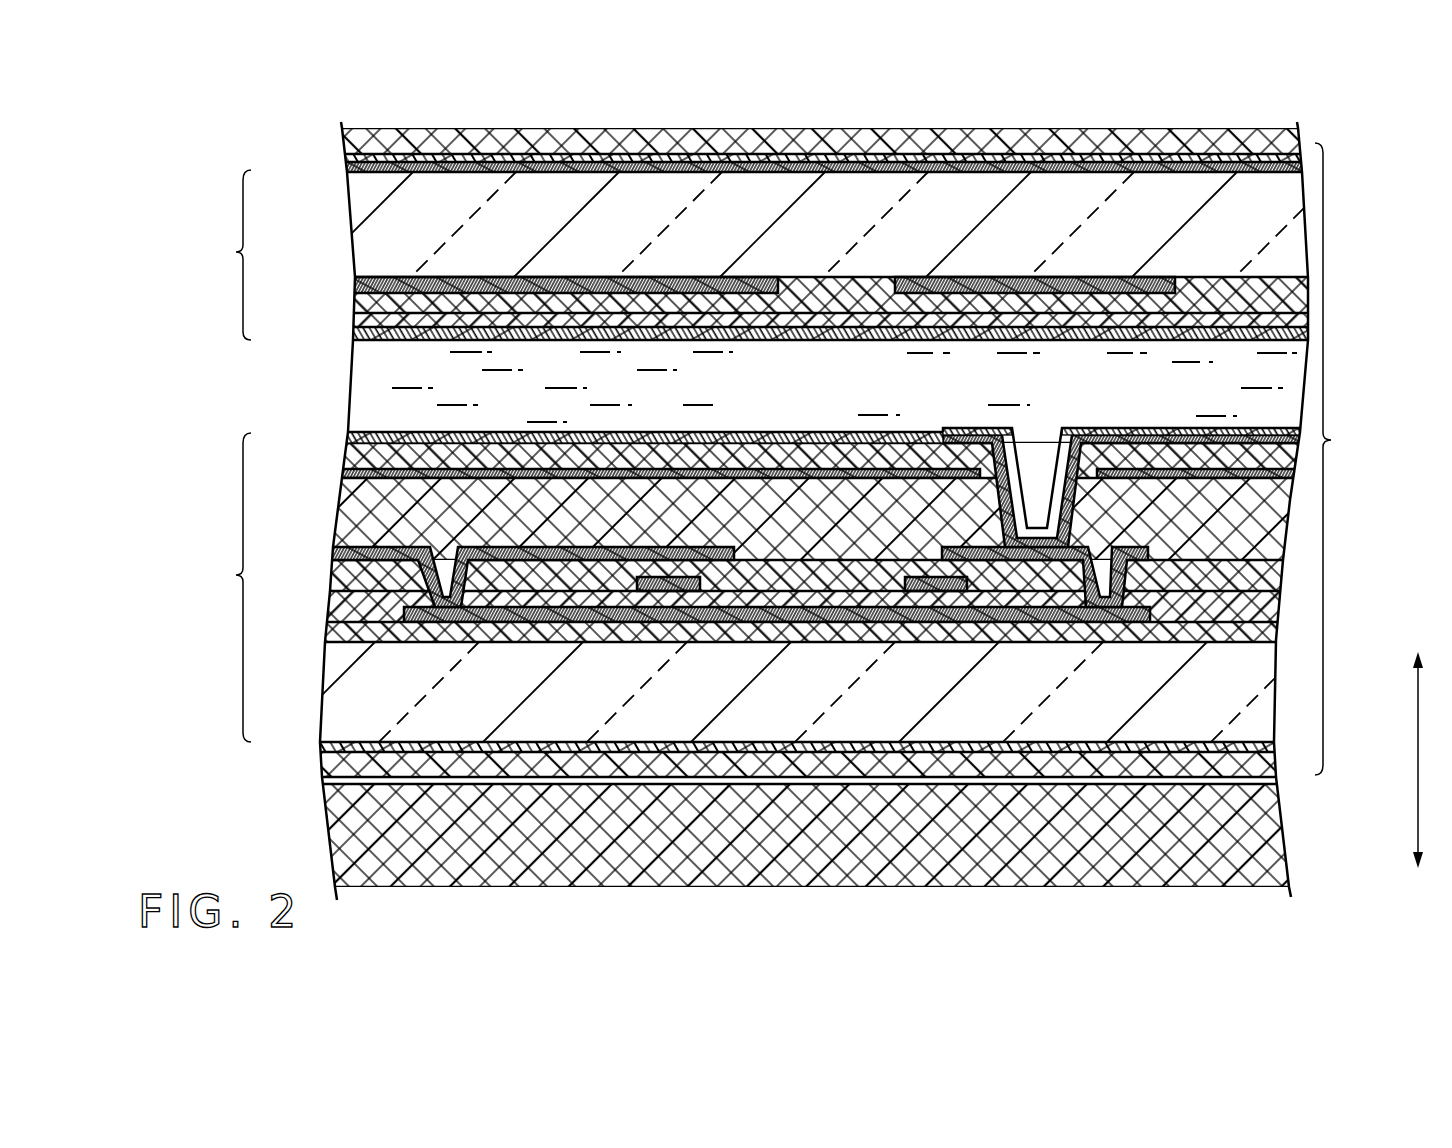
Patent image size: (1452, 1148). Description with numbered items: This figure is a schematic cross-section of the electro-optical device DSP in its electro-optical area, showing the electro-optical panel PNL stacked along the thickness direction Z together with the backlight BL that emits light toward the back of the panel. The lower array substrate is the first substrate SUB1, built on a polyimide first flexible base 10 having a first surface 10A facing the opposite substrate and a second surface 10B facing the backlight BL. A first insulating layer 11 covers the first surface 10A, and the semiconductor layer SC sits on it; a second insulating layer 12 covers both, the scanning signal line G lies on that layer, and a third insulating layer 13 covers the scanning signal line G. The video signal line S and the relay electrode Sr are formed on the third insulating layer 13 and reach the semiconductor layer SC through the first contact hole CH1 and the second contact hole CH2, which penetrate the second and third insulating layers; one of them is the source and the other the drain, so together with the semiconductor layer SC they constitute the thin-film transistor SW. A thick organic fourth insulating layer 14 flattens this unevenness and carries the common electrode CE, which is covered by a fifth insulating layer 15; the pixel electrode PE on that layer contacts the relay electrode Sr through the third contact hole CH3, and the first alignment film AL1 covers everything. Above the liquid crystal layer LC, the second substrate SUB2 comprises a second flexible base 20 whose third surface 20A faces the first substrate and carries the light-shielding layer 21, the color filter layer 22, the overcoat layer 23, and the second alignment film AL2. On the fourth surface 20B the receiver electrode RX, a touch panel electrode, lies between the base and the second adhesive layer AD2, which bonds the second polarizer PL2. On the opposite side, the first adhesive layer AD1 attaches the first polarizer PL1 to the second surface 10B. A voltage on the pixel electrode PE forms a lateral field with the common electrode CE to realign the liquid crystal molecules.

The second polarizer PL2 is at (342, 136).
The second adhesive layer AD2 is at (345, 158).
The receiver electrode RX is at (350, 168).
The second flexible base 20 is at (372, 246).
The light-shielding layer 21 is at (483, 278).
The color filter layer 22 is at (370, 302).
The overcoat layer 23 is at (368, 322).
The second alignment film AL2 is at (363, 335).
The second substrate SUB2 is at (214, 255).
The liquid crystal layer LC is at (360, 390).
The third surface 20A is at (840, 280).
The fourth surface 20B is at (846, 172).
The electro-optical device DSP is at (1266, 130).
The electro-optical panel PNL is at (1349, 459).
The common electrode CE is at (800, 469).
The third contact hole CH3 is at (1040, 450).
The pixel electrode PE is at (1175, 435).
The first alignment film AL1 is at (356, 437).
The fifth insulating layer 15 is at (358, 458).
The fourth insulating layer 14 is at (353, 522).
The first substrate SUB1 is at (214, 587).
The third insulating layer 13 is at (346, 575).
The second insulating layer 12 is at (341, 601).
The first insulating layer 11 is at (336, 630).
The first flexible base 10 is at (346, 708).
The first contact hole CH1 is at (442, 566).
The video signal line S is at (624, 547).
The scanning signal line G is at (693, 577).
The first surface 10A is at (832, 641).
The relay electrode Sr is at (970, 547).
The second contact hole CH2 is at (1104, 562).
The semiconductor layer SC is at (508, 622).
The thin-film transistor SW is at (777, 613).
The first adhesive layer AD1 is at (333, 747).
The first polarizer PL1 is at (330, 767).
The backlight BL is at (1233, 835).
The second surface 10B is at (800, 743).
The thickness direction Z is at (1418, 744).